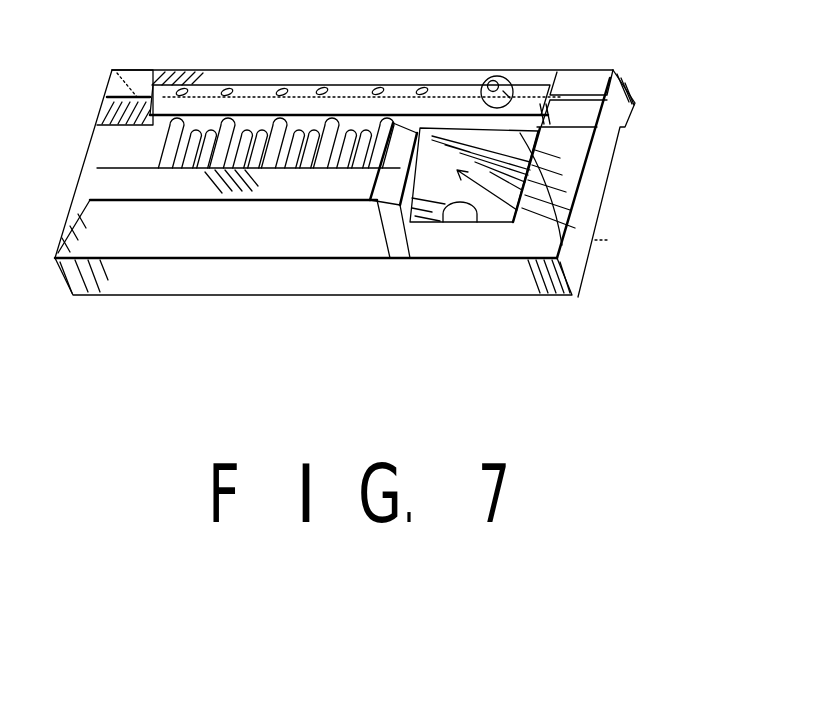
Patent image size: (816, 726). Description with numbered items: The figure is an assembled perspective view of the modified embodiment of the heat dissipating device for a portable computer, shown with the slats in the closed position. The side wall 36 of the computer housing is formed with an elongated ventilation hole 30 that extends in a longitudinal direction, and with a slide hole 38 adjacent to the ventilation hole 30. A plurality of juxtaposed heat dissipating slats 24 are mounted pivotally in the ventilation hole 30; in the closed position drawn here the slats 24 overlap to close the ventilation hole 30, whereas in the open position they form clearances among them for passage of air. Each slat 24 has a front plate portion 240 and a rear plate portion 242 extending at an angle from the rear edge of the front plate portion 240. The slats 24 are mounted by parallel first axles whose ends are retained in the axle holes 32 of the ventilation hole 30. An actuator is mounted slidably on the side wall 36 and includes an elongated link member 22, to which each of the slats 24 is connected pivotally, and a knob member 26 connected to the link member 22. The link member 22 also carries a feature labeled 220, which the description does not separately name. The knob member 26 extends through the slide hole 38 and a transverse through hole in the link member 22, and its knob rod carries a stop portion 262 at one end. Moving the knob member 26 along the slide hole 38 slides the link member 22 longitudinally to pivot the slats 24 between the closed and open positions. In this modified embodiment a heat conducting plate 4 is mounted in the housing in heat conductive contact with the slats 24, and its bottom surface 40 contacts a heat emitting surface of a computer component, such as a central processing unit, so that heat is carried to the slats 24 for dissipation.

The heat conducting plate 4 is at (85, 195).
The link member 22 is at (255, 100).
The heat dissipating slats 24 is at (571, 298).
The knob member 26 is at (642, 219).
The ventilation hole 30 is at (472, 222).
The axle holes 32 is at (433, 97).
The side wall 36 is at (137, 80).
The slide hole 38 is at (553, 100).
The bottom surface 40 is at (282, 217).
The ball 220 is at (440, 97).
The front plate portion 240 is at (385, 227).
The rear plate portion 242 is at (350, 160).
The stop portion 262 is at (570, 150).